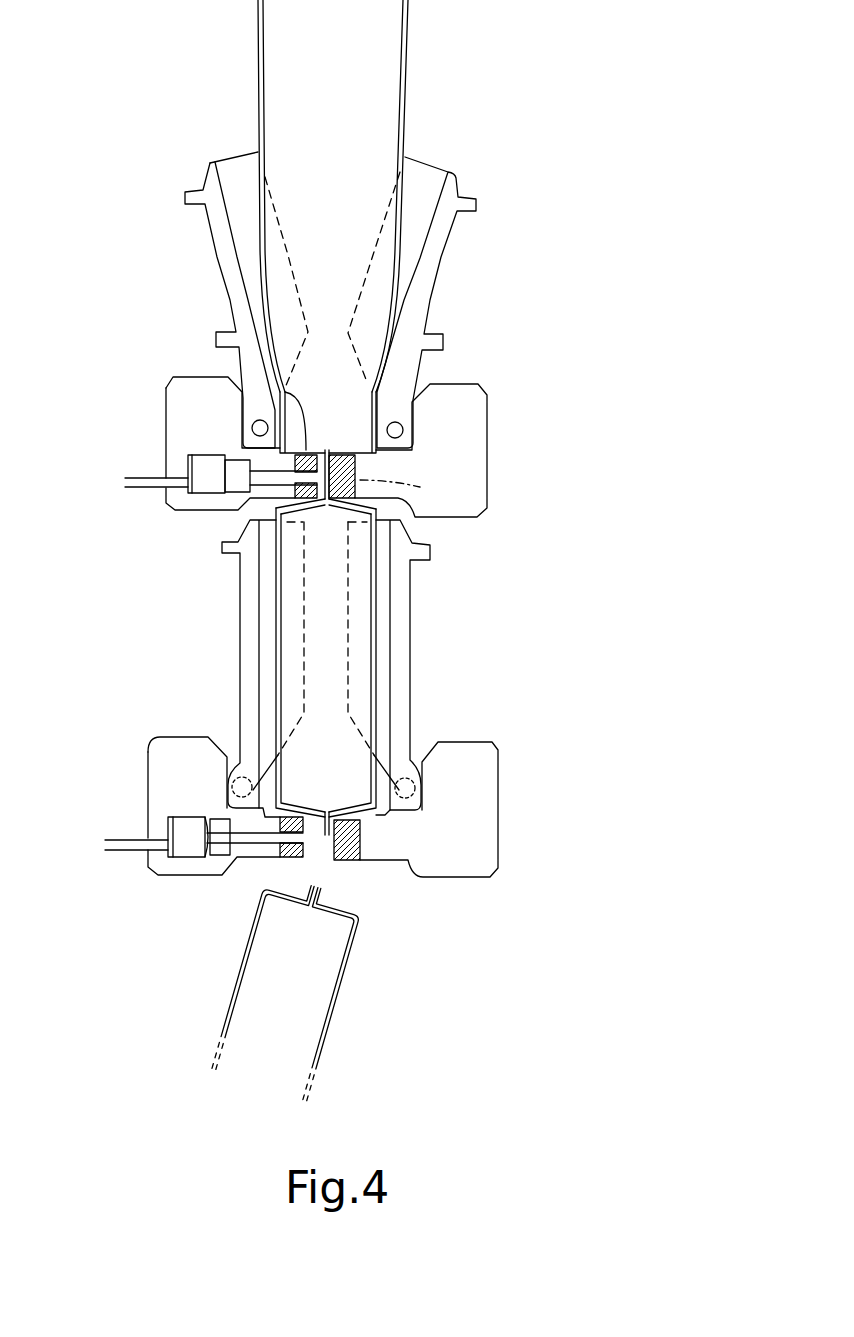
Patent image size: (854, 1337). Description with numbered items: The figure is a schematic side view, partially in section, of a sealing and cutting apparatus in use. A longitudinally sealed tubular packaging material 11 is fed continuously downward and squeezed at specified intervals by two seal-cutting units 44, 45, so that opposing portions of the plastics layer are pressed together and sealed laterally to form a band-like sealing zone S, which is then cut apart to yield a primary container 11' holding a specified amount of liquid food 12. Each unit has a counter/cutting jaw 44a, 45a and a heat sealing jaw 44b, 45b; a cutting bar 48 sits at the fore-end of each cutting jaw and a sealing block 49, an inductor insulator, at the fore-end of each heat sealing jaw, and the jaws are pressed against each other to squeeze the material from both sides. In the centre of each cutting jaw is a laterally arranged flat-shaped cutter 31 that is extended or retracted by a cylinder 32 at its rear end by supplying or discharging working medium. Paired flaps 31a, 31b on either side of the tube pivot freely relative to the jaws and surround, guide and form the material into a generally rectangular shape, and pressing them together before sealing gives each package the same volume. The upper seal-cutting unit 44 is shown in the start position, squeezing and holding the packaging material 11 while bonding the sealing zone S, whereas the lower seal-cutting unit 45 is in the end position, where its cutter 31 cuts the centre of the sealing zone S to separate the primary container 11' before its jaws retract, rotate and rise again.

The tubular packaging material 11 is at (401, 196).
The liquid food 12 is at (363, 110).
The cutter 31 is at (263, 482).
The flap 31a is at (207, 177).
The flap 31b is at (458, 180).
The cylinder 32 is at (200, 457).
The seal-cutting unit 44 is at (335, 441).
The cutting jaw 44a is at (163, 412).
The heat sealing jaw 44b is at (503, 413).
The seal-cutting unit 45 is at (335, 770).
The cutting jaw 45a is at (148, 745).
The heat sealing jaw 45b is at (500, 807).
The cutting bar 48 is at (308, 418).
The sealing block 49 is at (368, 671).
The sealing zone S is at (325, 430).
The primary container 11' is at (341, 987).